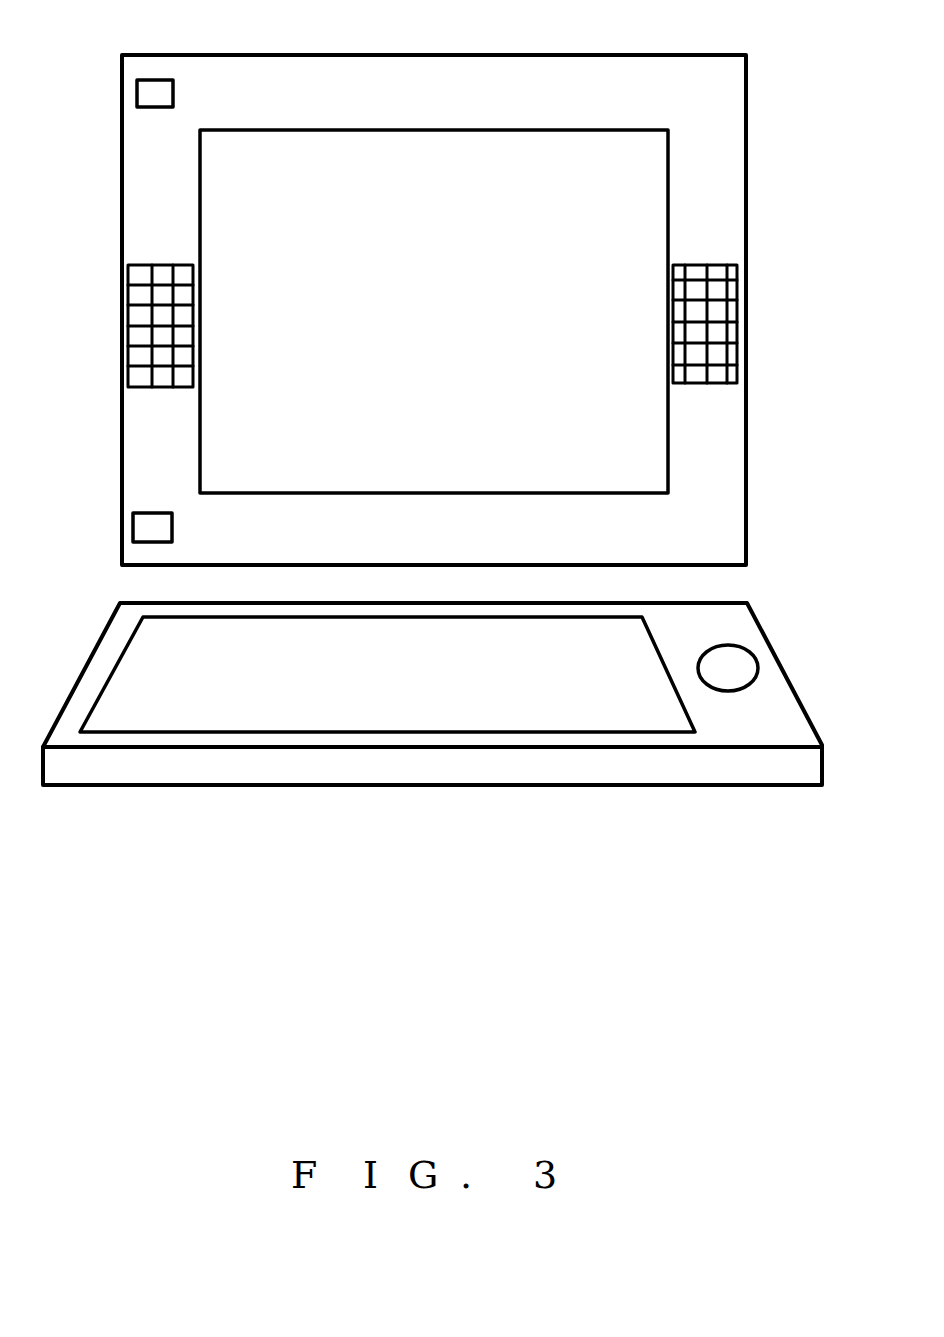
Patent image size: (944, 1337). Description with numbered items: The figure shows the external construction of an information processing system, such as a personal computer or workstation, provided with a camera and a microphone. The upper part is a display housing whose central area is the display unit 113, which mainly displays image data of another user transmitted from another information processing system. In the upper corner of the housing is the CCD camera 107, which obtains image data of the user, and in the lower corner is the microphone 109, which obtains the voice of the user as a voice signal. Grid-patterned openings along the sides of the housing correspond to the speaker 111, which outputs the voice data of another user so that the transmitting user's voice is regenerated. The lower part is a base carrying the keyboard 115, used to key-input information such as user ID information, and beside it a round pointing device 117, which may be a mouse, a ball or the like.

The CCD camera 107 is at (147, 85).
The microphone 109 is at (152, 533).
The speaker 111 is at (722, 370).
The display unit 113 is at (410, 150).
The keyboard 115 is at (393, 687).
The pointing device 117 is at (737, 685).